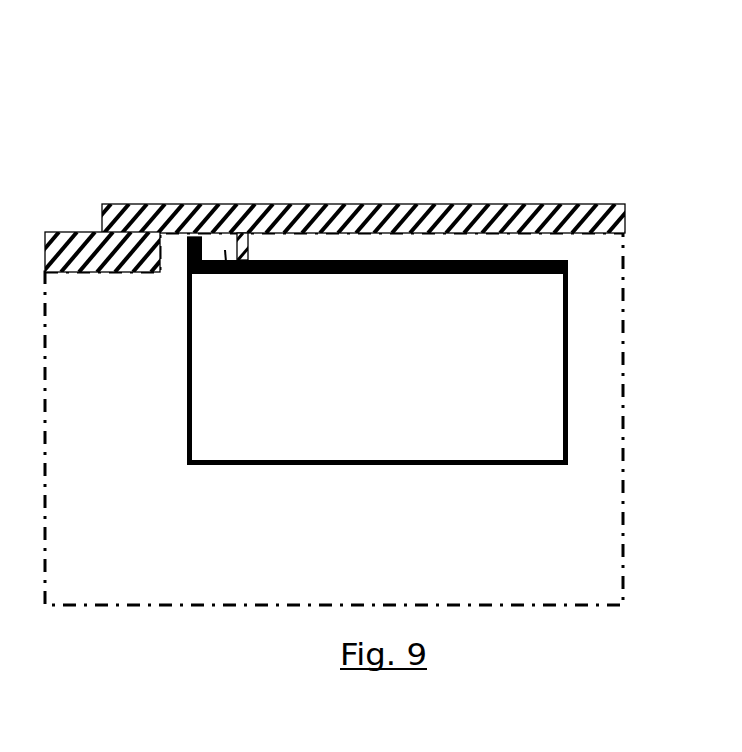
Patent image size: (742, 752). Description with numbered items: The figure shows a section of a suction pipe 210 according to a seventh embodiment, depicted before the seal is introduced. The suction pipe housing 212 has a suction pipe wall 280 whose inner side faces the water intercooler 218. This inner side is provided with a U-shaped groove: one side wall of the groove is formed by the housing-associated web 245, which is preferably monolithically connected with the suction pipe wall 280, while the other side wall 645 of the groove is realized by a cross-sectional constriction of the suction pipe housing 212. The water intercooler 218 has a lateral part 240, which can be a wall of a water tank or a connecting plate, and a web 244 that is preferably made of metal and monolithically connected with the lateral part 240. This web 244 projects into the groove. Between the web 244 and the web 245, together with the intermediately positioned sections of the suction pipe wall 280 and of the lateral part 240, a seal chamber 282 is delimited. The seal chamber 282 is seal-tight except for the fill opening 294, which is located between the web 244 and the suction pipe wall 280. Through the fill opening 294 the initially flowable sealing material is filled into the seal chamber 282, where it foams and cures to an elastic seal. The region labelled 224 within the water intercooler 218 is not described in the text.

The suction pipe 210 is at (178, 104).
The suction pipe housing 212 is at (530, 195).
The suction pipe wall 280 is at (445, 231).
The fill opening 294 is at (192, 233).
The side wall 645 is at (157, 250).
The web 244 is at (187, 257).
The seal chamber 282 is at (229, 272).
The housing-associated web 245 is at (249, 246).
The lateral part 240 is at (500, 276).
The chamber 224 is at (543, 433).
The water intercooler 218 is at (488, 463).